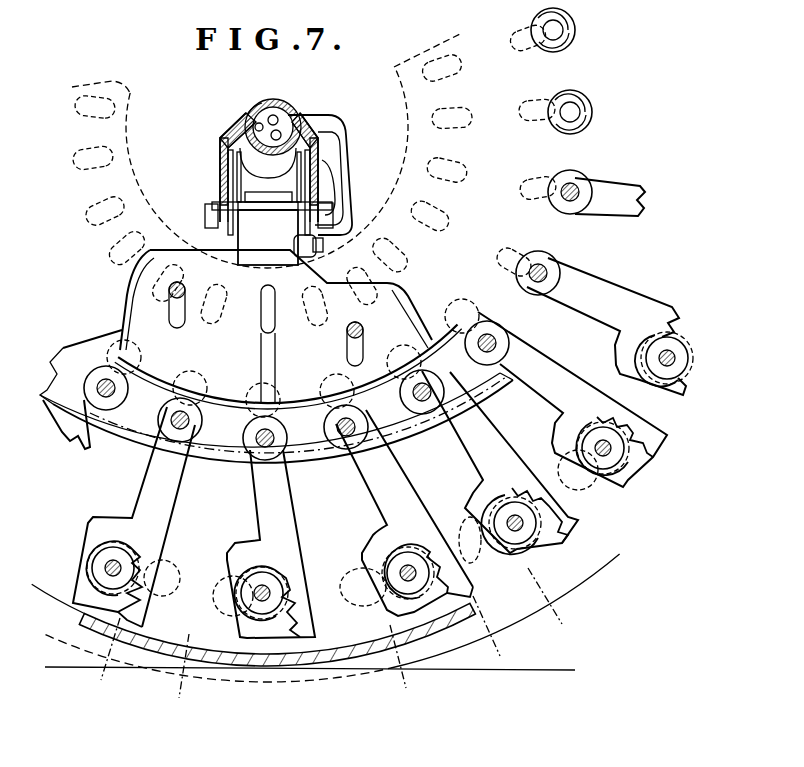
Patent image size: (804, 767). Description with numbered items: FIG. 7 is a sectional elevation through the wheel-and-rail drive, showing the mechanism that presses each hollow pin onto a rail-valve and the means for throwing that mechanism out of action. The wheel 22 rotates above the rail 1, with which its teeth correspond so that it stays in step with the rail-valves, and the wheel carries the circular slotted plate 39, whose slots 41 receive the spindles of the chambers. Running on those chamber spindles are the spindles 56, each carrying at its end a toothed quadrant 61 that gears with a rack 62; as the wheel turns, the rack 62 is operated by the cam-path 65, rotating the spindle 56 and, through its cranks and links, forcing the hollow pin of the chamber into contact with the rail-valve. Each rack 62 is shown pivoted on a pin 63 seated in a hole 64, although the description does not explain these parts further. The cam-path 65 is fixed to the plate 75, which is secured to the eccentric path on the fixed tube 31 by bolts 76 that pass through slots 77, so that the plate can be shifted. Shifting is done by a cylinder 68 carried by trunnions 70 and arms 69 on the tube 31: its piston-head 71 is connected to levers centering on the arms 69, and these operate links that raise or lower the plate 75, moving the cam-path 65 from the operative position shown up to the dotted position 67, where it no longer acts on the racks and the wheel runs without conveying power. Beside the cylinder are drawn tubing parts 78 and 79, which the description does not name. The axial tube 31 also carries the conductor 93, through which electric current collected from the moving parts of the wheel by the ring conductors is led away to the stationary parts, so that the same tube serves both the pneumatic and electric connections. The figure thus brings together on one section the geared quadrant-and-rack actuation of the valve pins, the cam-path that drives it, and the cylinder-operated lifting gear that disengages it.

The rail 1 is at (556, 672).
The wheel 22 is at (254, 625).
The tube 31 is at (248, 112).
The circular slotted plate 39 is at (128, 104).
The slot 41 is at (216, 600).
The spindle 56 is at (228, 578).
The toothed quadrant 61 is at (268, 618).
The rack 62 is at (292, 514).
The pivot pin 63 is at (238, 440).
The pivot hole 64 is at (214, 374).
The cam-path 65 is at (136, 404).
The dotted position 67 is at (166, 360).
The cylinder 68 is at (280, 233).
The arm 69 is at (220, 136).
The trunnion 70 is at (205, 212).
The piston-head 71 is at (268, 175).
The plate 75 is at (236, 262).
The bolt 76 is at (185, 290).
The slot 77 is at (176, 326).
The inner tube 78 is at (343, 198).
The outer tube 79 is at (294, 106).
The conductor 93 is at (270, 104).